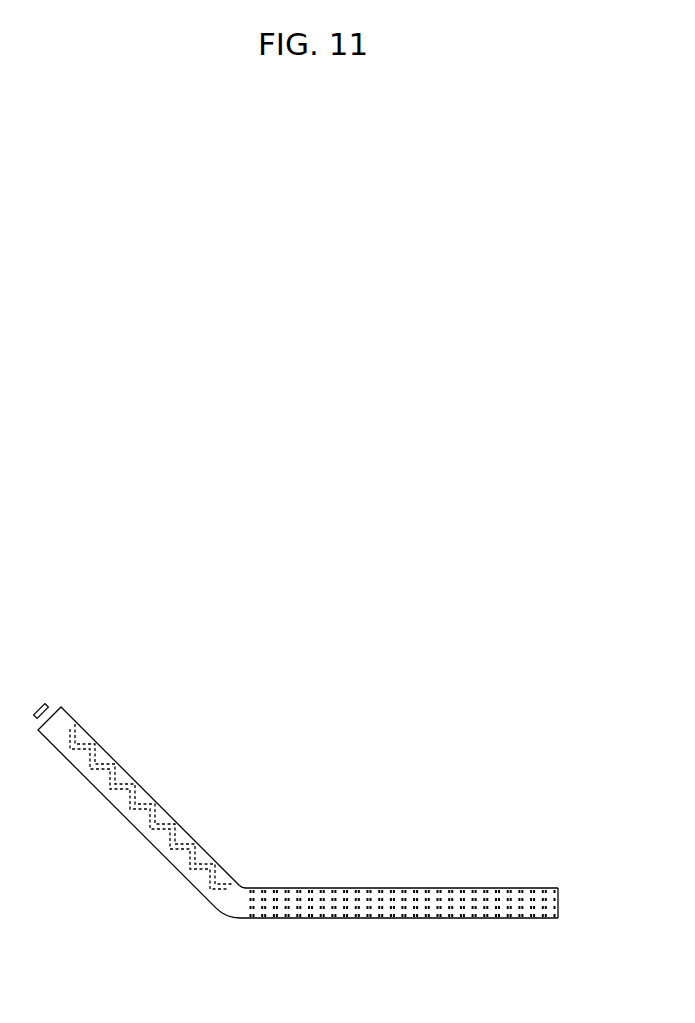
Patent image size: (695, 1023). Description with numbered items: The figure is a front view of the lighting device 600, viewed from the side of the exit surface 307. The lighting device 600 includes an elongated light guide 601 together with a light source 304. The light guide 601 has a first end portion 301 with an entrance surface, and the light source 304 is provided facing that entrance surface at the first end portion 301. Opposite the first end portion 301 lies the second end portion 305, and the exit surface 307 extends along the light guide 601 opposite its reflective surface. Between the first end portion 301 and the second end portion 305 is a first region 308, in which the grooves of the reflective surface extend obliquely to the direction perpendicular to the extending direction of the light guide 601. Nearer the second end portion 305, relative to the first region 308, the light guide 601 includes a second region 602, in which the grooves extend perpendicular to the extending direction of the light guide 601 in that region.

The lighting device 600 is at (493, 657).
The first end portion 301 is at (63, 713).
The light source 304 is at (48, 705).
The first region 308 is at (133, 777).
The exit surface 307 is at (342, 902).
The light guide 601 is at (298, 888).
The second region 602 is at (470, 888).
The second end portion 305 is at (557, 887).